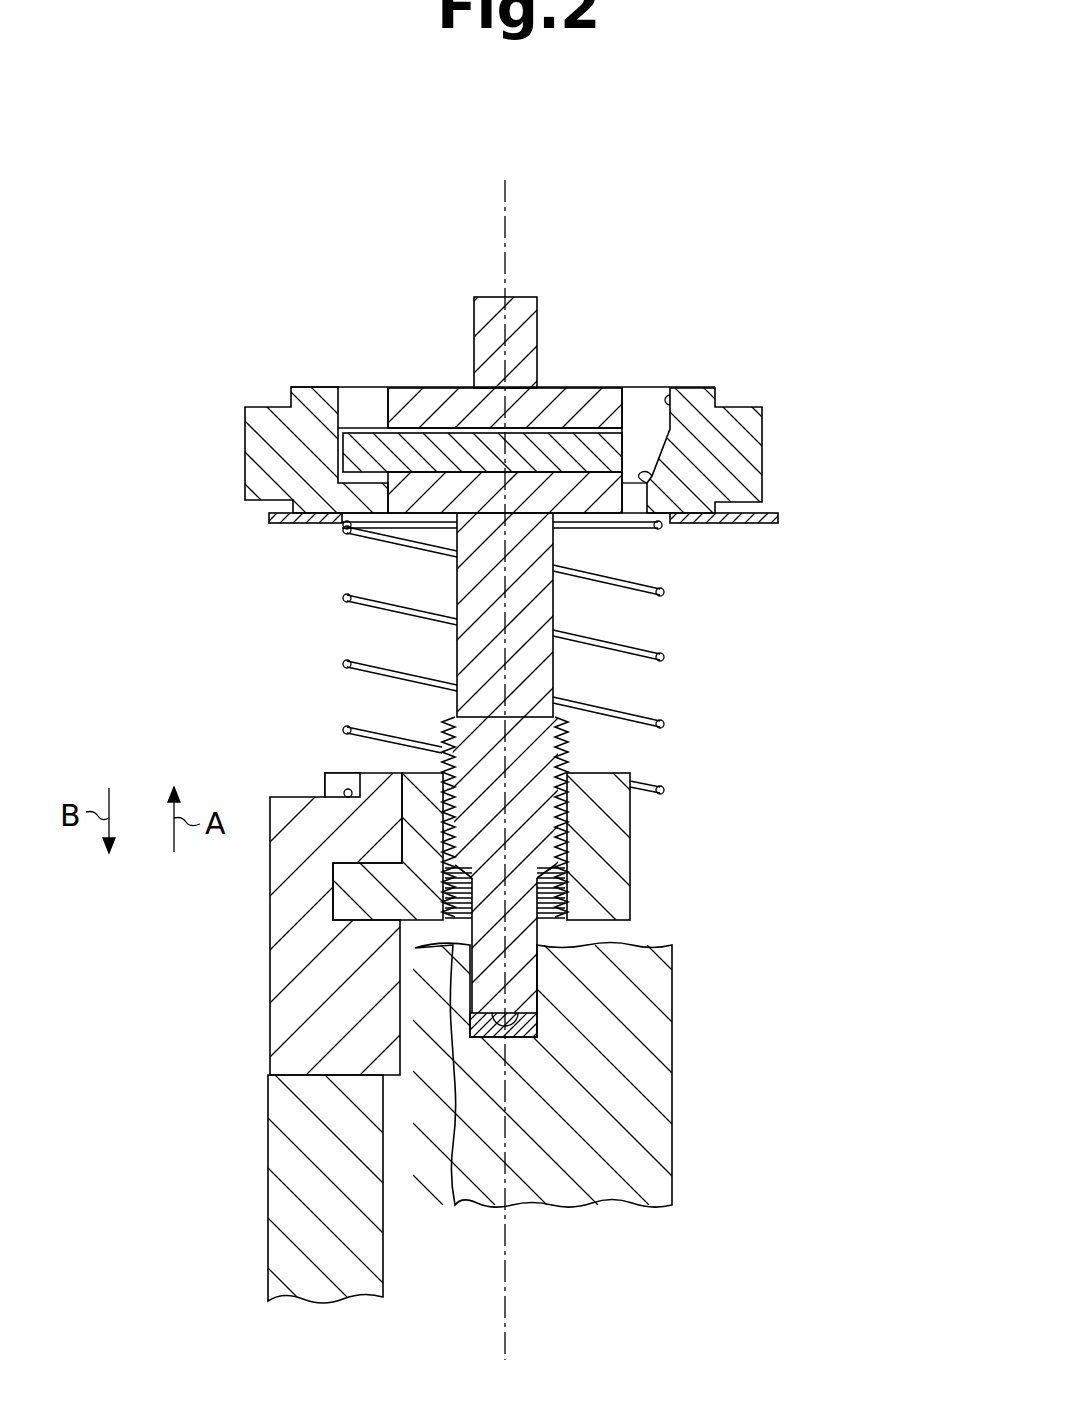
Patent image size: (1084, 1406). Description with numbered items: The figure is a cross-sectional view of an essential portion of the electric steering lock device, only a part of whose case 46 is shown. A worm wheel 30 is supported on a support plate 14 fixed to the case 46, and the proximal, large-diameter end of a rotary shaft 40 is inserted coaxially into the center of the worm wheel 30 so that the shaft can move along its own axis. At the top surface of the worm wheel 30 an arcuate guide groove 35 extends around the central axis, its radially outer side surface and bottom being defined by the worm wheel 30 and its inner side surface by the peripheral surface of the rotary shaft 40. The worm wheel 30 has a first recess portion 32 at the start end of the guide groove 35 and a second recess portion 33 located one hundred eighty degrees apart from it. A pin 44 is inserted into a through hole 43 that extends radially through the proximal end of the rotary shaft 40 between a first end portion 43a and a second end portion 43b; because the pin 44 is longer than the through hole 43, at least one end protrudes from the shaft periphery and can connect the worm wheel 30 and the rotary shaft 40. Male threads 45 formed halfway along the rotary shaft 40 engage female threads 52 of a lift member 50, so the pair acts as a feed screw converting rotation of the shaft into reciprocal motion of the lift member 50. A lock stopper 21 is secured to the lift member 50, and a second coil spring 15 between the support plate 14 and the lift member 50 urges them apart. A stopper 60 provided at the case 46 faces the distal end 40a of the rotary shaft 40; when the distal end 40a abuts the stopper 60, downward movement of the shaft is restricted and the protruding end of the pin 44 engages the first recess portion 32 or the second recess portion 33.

The support plate 14 is at (765, 523).
The second coil spring 15 is at (653, 653).
The lock stopper 21 is at (268, 975).
The worm wheel 30 is at (692, 383).
The first recess portion 32 is at (357, 483).
The second recess portion 33 is at (642, 500).
The guide groove 35 is at (676, 397).
The rotary shaft 40 is at (541, 333).
The distal end 40a is at (487, 1040).
The through hole 43 is at (458, 435).
The first end portion 43a is at (377, 428).
The second end portion 43b is at (630, 430).
The pin 44 is at (588, 453).
The male threads 45 is at (569, 736).
The case 46 is at (664, 1143).
The lift member 50 is at (628, 848).
The female threads 52 is at (548, 922).
The stopper 60 is at (520, 1028).